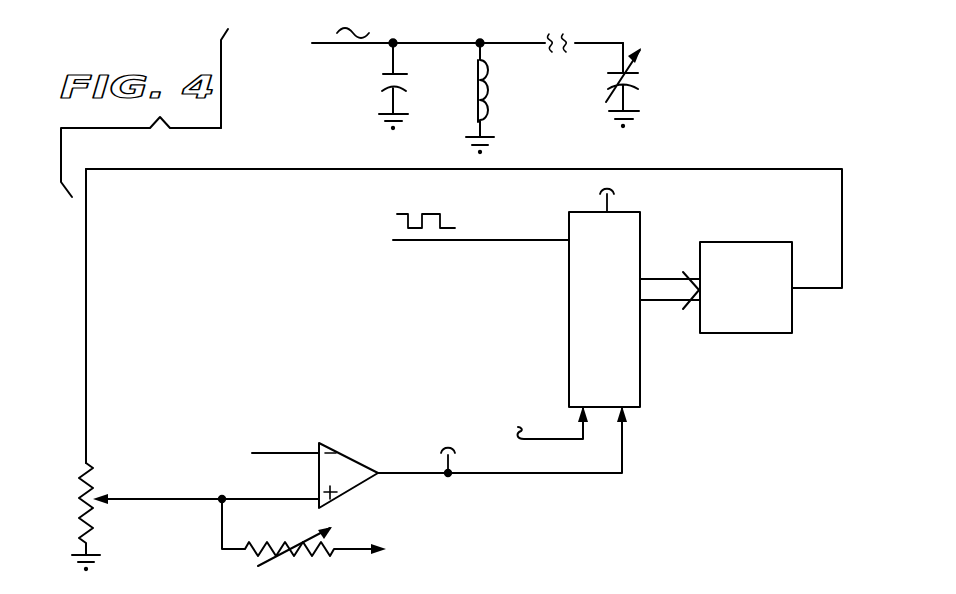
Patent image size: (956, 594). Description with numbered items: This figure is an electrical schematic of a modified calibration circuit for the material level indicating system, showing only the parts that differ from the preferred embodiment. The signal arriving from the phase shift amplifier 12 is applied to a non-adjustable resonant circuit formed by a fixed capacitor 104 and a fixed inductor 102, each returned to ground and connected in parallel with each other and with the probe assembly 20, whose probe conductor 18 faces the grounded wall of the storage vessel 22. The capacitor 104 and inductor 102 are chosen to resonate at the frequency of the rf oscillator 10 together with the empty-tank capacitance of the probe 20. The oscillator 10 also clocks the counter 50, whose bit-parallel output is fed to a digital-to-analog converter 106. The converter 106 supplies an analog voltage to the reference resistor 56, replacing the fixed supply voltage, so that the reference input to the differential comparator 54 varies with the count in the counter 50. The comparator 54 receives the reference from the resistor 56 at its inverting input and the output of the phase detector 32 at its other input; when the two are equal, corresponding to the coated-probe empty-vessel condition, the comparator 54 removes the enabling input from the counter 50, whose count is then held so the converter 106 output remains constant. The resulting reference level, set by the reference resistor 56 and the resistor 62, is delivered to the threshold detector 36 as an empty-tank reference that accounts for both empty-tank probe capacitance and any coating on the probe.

The rf oscillator 10 is at (440, 254).
The phase shift amplifier 12 is at (259, 43).
The probe conductor 18 is at (625, 42).
The probe assembly 20 is at (680, 77).
The storage vessel 22 is at (627, 101).
The phase detector 32 is at (218, 442).
The threshold detector 36 is at (496, 550).
The counter 50 is at (641, 226).
The differential comparator 54 is at (372, 449).
The reference resistor 56 is at (78, 517).
The resistor 62 is at (268, 545).
The fixed inductor 102 is at (486, 92).
The fixed capacitor 104 is at (382, 87).
The digital-to-analog converter 106 is at (758, 242).